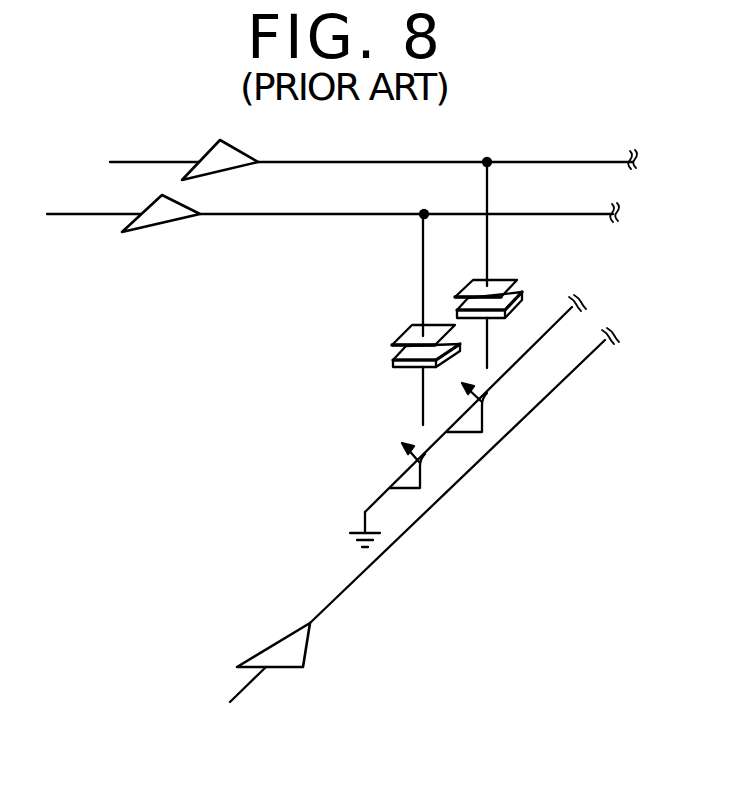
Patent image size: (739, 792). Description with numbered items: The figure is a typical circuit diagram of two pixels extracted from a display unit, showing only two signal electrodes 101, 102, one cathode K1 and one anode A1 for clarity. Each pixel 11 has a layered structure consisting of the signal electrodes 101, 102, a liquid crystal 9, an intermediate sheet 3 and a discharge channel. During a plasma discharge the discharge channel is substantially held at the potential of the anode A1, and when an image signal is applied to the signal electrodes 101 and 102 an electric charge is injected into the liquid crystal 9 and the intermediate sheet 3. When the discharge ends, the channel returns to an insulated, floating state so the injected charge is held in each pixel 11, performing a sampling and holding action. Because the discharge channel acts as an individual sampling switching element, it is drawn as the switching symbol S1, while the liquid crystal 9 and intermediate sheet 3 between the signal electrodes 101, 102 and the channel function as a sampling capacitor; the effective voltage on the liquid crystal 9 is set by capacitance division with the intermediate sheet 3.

The signal electrode 101 is at (475, 283).
The signal electrode 102 is at (410, 328).
The liquid crystal 9 is at (397, 352).
The intermediate sheet 3 is at (405, 368).
The pixel 11 is at (383, 338).
The sampling switch S1 is at (474, 403).
The anode A1 is at (352, 519).
The cathode K1 is at (424, 515).